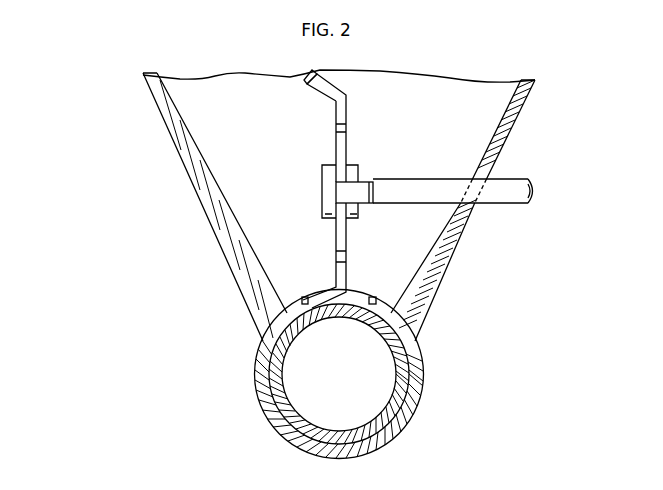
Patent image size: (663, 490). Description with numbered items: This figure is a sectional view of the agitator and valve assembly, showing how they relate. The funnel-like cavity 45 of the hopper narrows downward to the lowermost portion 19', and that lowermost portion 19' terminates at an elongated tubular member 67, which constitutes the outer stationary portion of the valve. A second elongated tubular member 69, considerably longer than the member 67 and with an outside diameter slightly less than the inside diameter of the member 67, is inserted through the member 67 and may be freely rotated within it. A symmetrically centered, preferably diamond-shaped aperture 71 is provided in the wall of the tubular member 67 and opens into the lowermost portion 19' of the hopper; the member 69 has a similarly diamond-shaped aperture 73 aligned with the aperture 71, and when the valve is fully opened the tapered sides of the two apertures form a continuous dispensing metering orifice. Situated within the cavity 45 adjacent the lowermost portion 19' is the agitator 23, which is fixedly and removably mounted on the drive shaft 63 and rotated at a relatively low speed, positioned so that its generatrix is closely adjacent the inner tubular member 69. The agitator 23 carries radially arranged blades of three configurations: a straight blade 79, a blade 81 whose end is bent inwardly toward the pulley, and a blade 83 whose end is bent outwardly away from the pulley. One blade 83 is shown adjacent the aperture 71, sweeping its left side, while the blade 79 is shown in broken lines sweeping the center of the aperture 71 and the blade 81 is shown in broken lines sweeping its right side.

The lowermost portion of the hopper 19' is at (165, 207).
The funnel-like cavity 45 is at (262, 177).
The blade 83 is at (320, 85).
The straight blade 79 is at (344, 128).
The blade 81 is at (360, 190).
The drive shaft 63 is at (502, 190).
The agitator 23 is at (333, 188).
The aperture 71 is at (303, 299).
The aperture 73 is at (312, 316).
The second elongated tubular member 69 is at (275, 388).
The elongated tubular member 67 is at (417, 360).